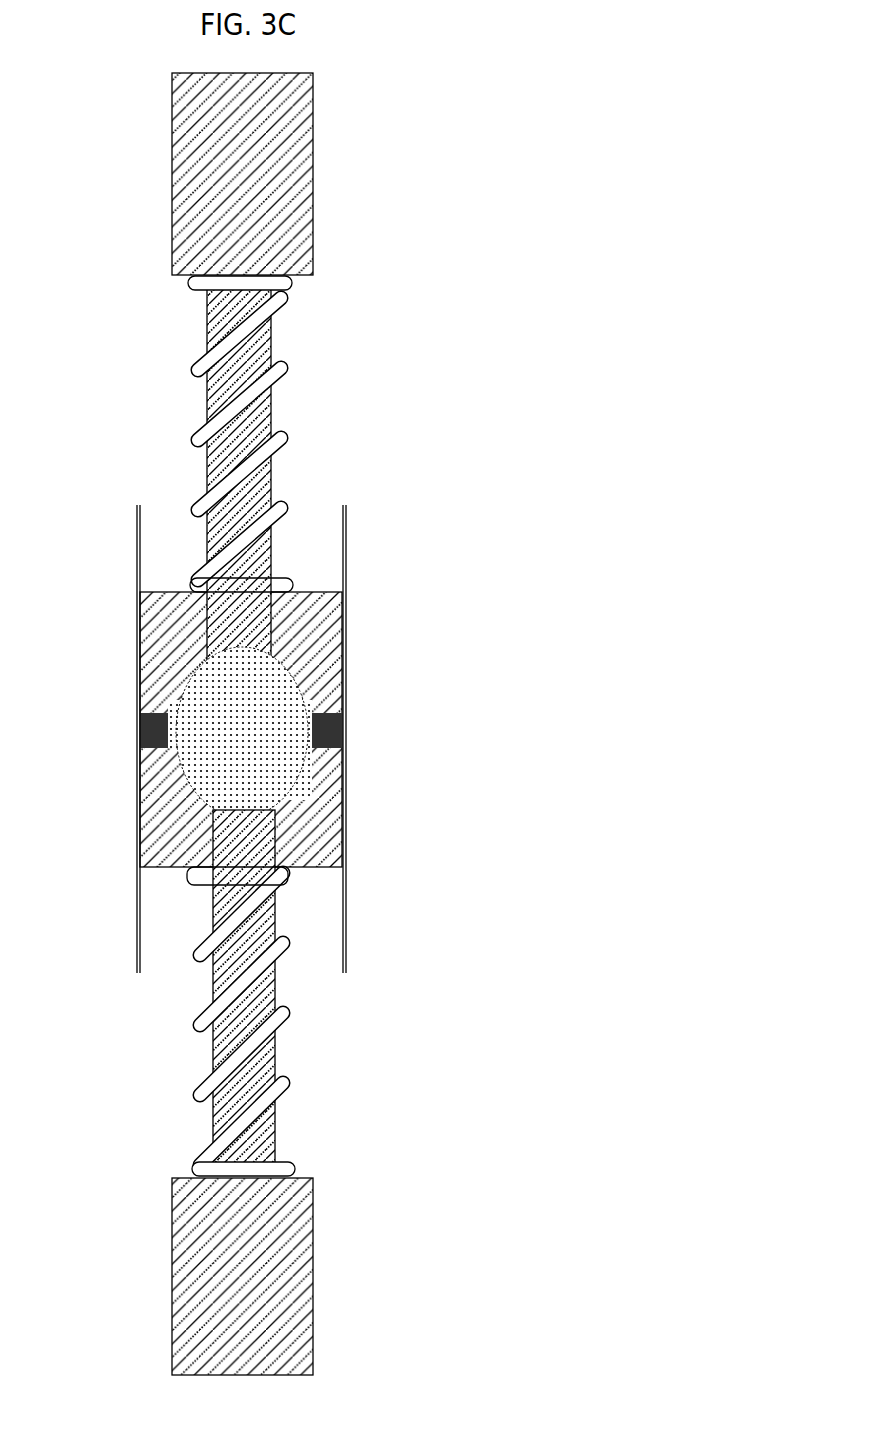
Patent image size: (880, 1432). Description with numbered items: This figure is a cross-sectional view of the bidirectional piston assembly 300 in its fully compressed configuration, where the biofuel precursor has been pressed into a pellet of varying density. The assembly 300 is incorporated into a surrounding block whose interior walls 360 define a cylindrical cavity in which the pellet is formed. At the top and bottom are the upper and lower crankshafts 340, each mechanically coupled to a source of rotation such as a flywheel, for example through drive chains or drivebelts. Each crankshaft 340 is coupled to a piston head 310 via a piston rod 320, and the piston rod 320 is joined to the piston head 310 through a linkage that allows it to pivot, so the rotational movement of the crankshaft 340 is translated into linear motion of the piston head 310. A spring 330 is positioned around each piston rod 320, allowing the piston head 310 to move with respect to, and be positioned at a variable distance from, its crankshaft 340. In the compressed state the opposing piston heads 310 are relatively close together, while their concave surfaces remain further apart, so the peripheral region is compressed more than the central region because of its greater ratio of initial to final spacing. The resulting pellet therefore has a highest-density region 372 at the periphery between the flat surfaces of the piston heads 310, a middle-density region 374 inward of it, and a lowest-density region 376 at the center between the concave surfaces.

The bidirectional piston assembly 300 is at (454, 716).
The piston head 310 is at (312, 607).
The piston rod 320 is at (270, 332).
The spring 330 is at (288, 503).
The crankshaft 340 is at (273, 205).
The interior walls 360 is at (342, 778).
The pellet region of highest density 372 is at (153, 730).
The region of middle density 374 is at (293, 710).
The region of lowest density 376 is at (252, 693).